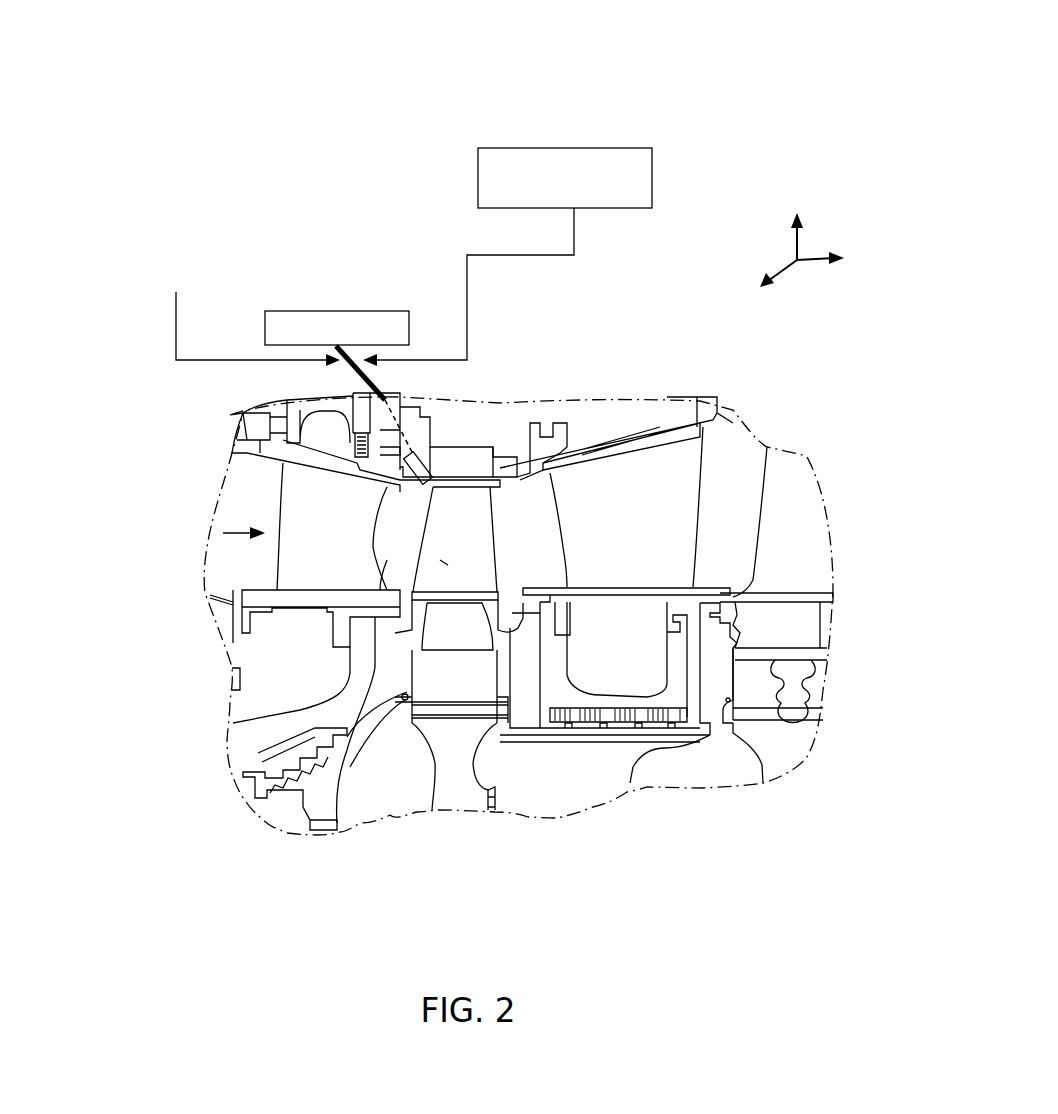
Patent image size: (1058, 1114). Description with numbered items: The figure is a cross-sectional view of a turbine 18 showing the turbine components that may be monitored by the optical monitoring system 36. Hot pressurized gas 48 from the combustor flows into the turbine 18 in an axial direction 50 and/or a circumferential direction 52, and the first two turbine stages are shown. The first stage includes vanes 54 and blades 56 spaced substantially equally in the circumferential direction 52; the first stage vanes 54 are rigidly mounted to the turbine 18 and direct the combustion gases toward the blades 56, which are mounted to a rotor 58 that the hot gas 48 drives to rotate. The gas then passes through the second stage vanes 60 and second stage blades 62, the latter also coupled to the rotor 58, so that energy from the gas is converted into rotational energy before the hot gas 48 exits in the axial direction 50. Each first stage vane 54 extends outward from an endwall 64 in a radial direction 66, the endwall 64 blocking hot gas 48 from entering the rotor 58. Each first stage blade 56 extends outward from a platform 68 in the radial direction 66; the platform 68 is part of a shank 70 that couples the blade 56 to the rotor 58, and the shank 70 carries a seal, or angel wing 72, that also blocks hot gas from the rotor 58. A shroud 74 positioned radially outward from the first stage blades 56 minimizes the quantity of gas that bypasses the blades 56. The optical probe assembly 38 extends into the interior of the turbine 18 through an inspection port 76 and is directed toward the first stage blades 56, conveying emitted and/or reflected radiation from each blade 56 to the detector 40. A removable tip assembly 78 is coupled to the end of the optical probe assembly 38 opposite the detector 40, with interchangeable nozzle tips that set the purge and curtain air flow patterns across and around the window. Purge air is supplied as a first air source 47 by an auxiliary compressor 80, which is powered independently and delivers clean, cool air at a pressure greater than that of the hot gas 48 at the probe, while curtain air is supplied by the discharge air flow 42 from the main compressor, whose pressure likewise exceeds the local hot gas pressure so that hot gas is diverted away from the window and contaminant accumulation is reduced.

The turbine 18 is at (623, 424).
The optical monitoring system 36 is at (576, 93).
The optical probe assembly 38 is at (342, 368).
The detector 40 is at (345, 311).
The discharge air flow 42 is at (176, 330).
The first air source 47 is at (525, 258).
The hot pressurized gas 48 is at (233, 533).
The axial direction 50 is at (817, 263).
The circumferential direction 52 is at (777, 267).
The first stage vanes 54 is at (305, 543).
The first stage blades 56 is at (450, 540).
The rotor 58 is at (370, 723).
The second stage vanes 60 is at (643, 605).
The second stage blades 62 is at (776, 585).
The endwall 64 is at (380, 583).
The radial direction 66 is at (797, 237).
The platform 68 is at (470, 593).
The shank 70 is at (423, 631).
The angel wing 72 is at (508, 623).
The shroud 74 is at (450, 473).
The inspection port 76 is at (410, 400).
The tip assembly 78 is at (415, 476).
The auxiliary compressor 80 is at (478, 176).